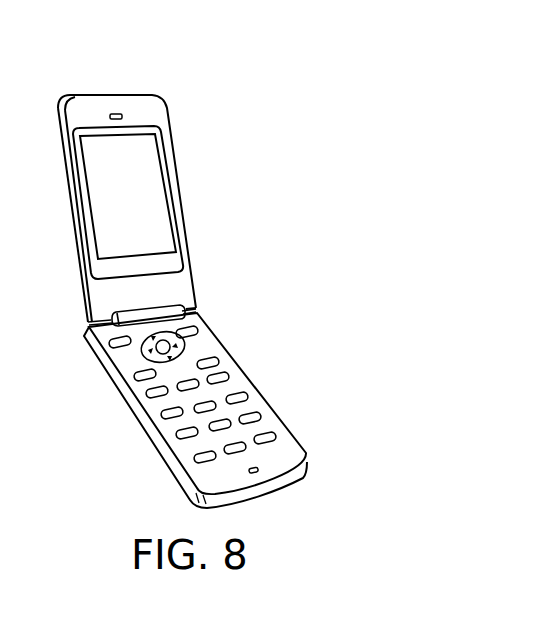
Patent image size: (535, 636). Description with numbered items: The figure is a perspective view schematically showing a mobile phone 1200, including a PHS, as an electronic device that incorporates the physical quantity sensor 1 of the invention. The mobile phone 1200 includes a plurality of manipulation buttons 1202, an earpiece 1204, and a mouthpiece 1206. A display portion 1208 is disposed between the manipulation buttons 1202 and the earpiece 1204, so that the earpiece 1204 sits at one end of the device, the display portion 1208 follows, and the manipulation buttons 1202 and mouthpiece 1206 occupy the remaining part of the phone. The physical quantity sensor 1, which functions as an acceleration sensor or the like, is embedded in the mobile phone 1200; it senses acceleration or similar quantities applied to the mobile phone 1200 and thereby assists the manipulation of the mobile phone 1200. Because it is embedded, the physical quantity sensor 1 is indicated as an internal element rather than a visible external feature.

The mobile phone 1200 is at (230, 260).
The earpiece 1204 is at (117, 111).
The display portion 1208 is at (155, 187).
The physical quantity sensor 1 is at (201, 346).
The manipulation buttons 1202 is at (228, 375).
The mouthpiece 1206 is at (255, 467).